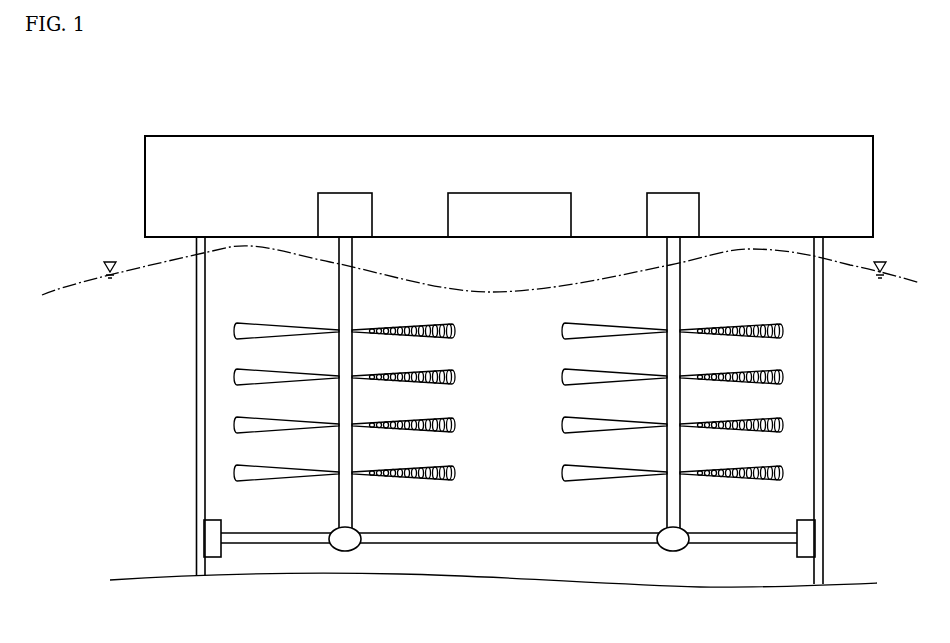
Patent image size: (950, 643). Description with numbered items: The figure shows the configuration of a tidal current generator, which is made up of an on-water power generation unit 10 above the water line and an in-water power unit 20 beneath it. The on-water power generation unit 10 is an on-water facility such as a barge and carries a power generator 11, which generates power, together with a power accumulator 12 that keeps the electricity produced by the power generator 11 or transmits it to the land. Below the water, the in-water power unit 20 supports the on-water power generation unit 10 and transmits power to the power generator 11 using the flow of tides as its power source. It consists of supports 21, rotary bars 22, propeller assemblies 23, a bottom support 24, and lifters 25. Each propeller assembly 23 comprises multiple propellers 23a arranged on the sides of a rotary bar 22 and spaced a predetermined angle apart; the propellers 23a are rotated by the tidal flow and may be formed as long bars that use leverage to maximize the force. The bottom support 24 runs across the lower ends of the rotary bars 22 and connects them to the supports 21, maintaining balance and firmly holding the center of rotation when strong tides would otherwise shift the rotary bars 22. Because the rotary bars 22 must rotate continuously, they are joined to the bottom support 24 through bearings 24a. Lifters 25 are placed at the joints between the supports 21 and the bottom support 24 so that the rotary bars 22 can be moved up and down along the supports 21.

The on-water power generation unit 10 is at (461, 151).
The power generator 11 is at (325, 208).
The power accumulator 12 is at (507, 193).
The in-water power unit 20 is at (469, 439).
The support 21 is at (196, 322).
The rotary bar 22 is at (339, 497).
The propeller assembly 23 is at (508, 402).
The propeller 23a is at (563, 335).
The bottom support 24 is at (510, 546).
The bearing 24a is at (345, 551).
The lifter 25 is at (206, 531).